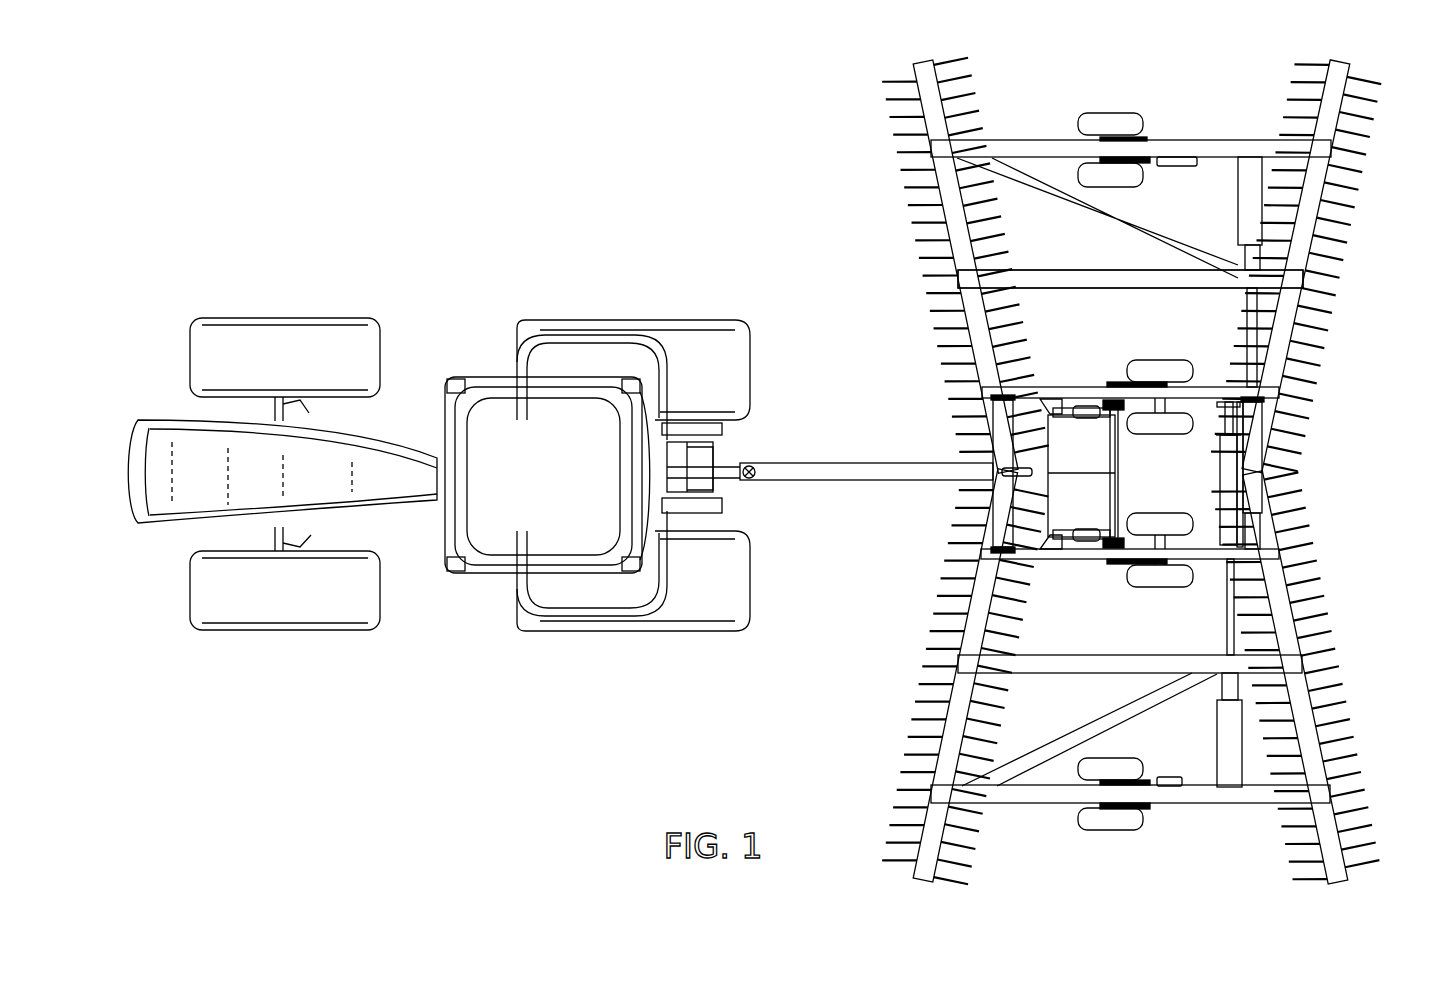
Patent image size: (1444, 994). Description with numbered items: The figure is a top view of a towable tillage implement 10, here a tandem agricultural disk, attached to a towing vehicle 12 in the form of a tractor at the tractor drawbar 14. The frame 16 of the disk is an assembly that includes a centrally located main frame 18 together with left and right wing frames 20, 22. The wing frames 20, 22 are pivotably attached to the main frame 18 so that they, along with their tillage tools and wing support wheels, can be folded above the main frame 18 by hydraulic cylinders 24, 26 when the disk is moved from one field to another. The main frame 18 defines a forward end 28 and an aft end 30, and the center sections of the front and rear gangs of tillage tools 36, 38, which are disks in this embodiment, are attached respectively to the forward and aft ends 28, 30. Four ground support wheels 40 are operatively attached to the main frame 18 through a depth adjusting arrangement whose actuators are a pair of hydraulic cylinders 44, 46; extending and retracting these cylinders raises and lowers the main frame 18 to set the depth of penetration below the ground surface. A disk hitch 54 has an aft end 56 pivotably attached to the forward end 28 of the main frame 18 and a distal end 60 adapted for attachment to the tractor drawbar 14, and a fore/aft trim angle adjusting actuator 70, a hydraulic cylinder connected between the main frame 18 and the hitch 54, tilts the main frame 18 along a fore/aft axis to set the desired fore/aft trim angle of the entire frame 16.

The towable tillage implement 10 is at (1097, 472).
The towing vehicle 12 is at (492, 580).
The drawbar 14 is at (753, 468).
The frame 16 is at (896, 261).
The main frame 18 is at (1086, 385).
The left wing frame 20 is at (1131, 655).
The right wing frame 22 is at (1008, 140).
The hydraulic cylinder 24 is at (1252, 464).
The hydraulic cylinder 26 is at (1221, 512).
The forward end 28 is at (978, 561).
The aft end 30 is at (1275, 554).
The front gang of tillage tools 36 is at (991, 399).
The rear gang of tillage tools 38 is at (1284, 418).
The ground support wheels 40 is at (1146, 360).
The depth adjusting hydraulic cylinder 44 is at (1093, 528).
The depth adjusting hydraulic cylinder 46 is at (1093, 420).
The disk hitch 54 is at (851, 481).
The aft end of hitch 56 is at (991, 512).
The distal end of hitch 60 is at (790, 482).
The fore/aft trim angle adjusting actuator 70 is at (1005, 469).